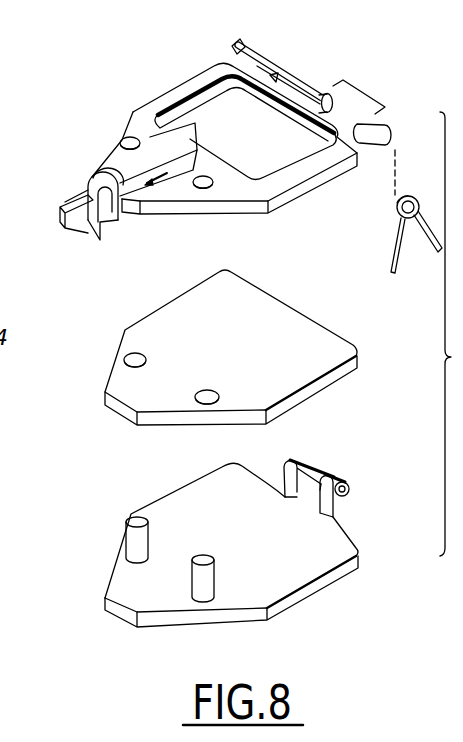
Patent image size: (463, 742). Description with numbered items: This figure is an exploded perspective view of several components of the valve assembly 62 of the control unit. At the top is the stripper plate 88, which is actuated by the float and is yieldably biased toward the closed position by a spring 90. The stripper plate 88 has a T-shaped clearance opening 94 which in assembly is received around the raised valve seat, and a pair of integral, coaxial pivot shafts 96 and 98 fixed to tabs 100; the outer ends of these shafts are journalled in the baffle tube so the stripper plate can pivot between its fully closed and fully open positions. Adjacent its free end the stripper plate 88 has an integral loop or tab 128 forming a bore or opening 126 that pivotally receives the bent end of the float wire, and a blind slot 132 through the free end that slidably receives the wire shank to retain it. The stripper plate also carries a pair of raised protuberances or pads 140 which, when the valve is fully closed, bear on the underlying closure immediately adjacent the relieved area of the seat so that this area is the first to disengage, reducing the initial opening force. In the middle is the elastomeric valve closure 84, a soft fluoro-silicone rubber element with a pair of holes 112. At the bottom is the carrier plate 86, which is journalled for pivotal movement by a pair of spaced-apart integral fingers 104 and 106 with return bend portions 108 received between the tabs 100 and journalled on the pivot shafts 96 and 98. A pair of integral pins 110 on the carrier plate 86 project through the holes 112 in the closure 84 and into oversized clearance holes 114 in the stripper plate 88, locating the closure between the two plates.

The valve assembly 62 is at (130, 81).
The elastomeric valve closure 84 is at (290, 313).
The carrier plate 86 is at (306, 600).
The stripper plate 88 is at (157, 96).
The spring 90 is at (393, 248).
The T-shaped clearance opening 94 is at (188, 95).
The pivot shaft 96 is at (300, 78).
The pivot shaft 98 is at (357, 98).
The tabs 100 is at (262, 66).
The finger 104 is at (303, 450).
The finger 106 is at (308, 502).
The return bend portions 108 is at (351, 491).
The pins 110 is at (214, 556).
The holes 112 is at (207, 386).
The clearance holes 114 is at (203, 176).
The bore or opening 126 is at (121, 208).
The loop or tab 128 is at (88, 177).
The blind slot 132 is at (60, 214).
The raised protuberances or pads 140 is at (165, 184).